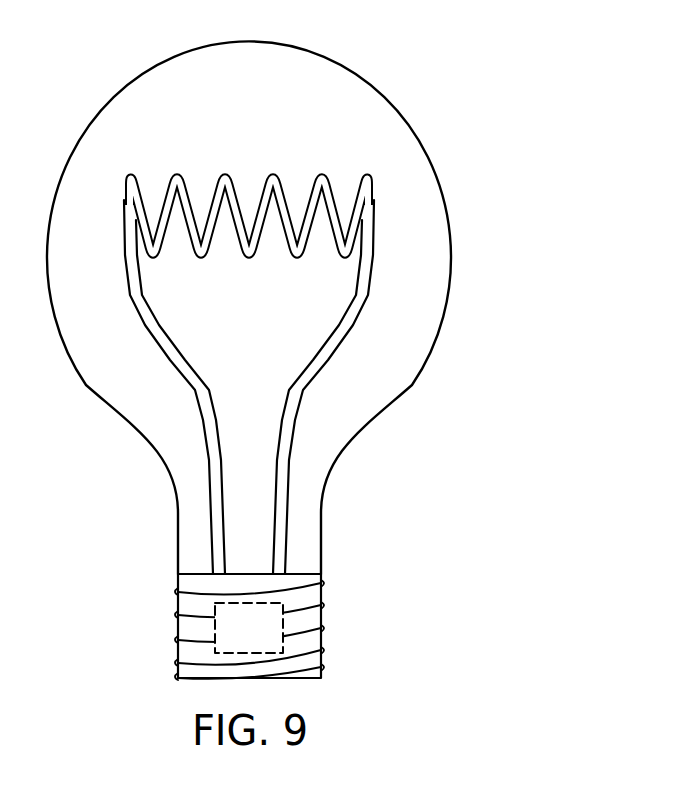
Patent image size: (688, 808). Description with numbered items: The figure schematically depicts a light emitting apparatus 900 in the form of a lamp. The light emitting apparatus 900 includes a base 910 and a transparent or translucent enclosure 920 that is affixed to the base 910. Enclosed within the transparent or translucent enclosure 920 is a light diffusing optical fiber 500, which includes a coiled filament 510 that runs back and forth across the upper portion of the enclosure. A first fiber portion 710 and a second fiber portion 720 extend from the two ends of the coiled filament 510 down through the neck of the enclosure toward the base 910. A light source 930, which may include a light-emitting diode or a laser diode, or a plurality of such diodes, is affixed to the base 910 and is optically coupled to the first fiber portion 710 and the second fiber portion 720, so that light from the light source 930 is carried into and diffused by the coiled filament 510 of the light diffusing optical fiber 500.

The light emitting apparatus 900 is at (497, 104).
The transparent or translucent enclosure 920 is at (424, 89).
The light diffusing optical fiber 500 is at (259, 162).
The coiled filament 510 is at (263, 172).
The first fiber portion 710 is at (144, 312).
The second fiber portion 720 is at (354, 312).
The base 910 is at (178, 622).
The light source 930 is at (275, 628).